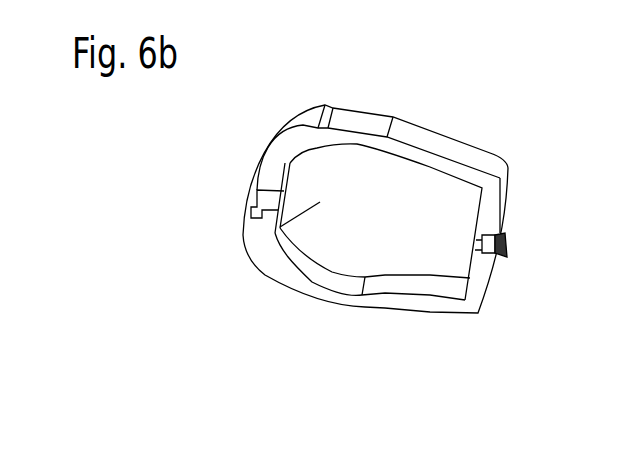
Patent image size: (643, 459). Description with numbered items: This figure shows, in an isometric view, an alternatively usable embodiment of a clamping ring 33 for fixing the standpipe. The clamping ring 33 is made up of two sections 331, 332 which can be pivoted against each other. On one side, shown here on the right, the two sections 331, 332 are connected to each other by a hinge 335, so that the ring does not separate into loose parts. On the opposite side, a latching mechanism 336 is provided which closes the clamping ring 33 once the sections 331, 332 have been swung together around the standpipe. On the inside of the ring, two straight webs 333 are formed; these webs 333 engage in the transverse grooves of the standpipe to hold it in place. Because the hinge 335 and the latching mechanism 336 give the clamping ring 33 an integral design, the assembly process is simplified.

The clamping ring 33 is at (460, 125).
The section 331 is at (500, 150).
The section 332 is at (325, 302).
The straight web 333 is at (320, 202).
The hinge 335 is at (505, 235).
The latching mechanism 336 is at (256, 207).